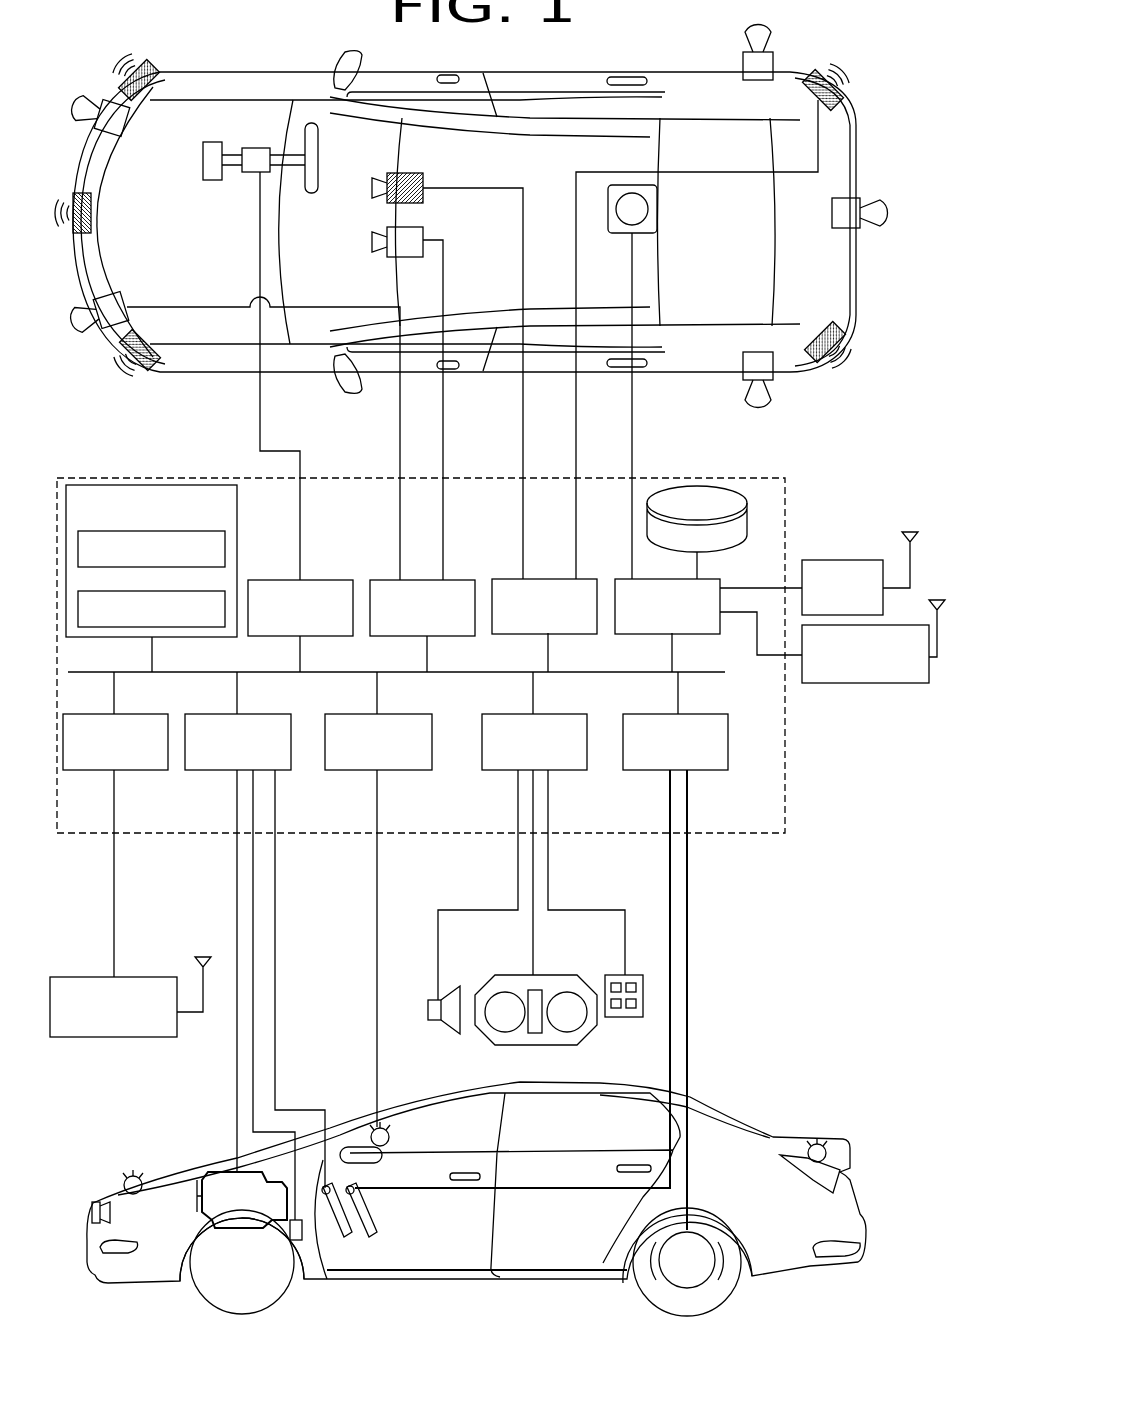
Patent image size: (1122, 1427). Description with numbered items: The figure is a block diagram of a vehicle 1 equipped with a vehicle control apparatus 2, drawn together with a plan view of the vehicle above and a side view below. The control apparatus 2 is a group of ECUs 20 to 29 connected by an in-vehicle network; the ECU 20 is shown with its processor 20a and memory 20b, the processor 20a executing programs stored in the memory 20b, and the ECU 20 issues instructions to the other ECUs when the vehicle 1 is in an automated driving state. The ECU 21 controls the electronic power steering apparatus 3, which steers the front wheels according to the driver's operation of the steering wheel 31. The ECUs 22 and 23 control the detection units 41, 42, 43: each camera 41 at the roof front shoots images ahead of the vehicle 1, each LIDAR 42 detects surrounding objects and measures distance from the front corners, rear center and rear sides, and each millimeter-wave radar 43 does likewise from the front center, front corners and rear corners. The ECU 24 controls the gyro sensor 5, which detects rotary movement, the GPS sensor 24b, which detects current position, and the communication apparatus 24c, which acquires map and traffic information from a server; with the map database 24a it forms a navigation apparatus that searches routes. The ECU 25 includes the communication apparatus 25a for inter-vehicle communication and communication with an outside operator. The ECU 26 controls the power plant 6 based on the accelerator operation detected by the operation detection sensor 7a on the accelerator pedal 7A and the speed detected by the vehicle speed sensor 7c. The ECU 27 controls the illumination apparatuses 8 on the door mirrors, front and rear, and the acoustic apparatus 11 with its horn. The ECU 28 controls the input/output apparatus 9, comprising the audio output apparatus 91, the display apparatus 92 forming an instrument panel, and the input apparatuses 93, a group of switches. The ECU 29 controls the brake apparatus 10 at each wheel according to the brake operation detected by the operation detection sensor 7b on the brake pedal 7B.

The vehicle 1 is at (870, 122).
The vehicle control apparatus 2 is at (765, 836).
The electronic power steering apparatus 3 is at (212, 182).
The steering wheel 31 is at (312, 195).
The detection unit (camera) 41 is at (425, 198).
The detection unit (LIDAR) 42 is at (118, 140).
The detection unit (millimeter-wave radar) 43 is at (147, 84).
The gyro sensor 5 is at (657, 210).
The ECU 20 is at (203, 485).
The processor 20a is at (225, 540).
The memory 20b is at (200, 587).
The ECU 21 is at (330, 578).
The ECU 22 is at (420, 578).
The ECU 23 is at (548, 578).
The ECU 24 is at (613, 578).
The database (map database) 24a is at (698, 484).
The GPS sensor 24b is at (862, 558).
The communication apparatus 24c is at (855, 685).
The ECU 25 is at (145, 773).
The communication apparatus 25a is at (115, 1040).
The ECU 26 is at (207, 773).
The ECU 27 is at (405, 773).
The ECU 28 is at (572, 773).
The ECU 29 is at (709, 773).
The power plant 6 is at (206, 1168).
The operation detection sensor 7a is at (333, 1134).
The accelerator pedal 7A is at (353, 1230).
The operation detection sensor 7b is at (352, 1188).
The brake pedal 7B is at (380, 1221).
The vehicle speed sensor 7c is at (294, 1258).
The illumination apparatus 8 is at (124, 1176).
The input/output apparatus 9 is at (485, 1046).
The audio output apparatus 91 is at (430, 1004).
The display apparatus 92 is at (497, 993).
The input apparatus 93 is at (618, 1018).
The brake apparatus 10 is at (690, 1272).
The acoustic apparatus 11 is at (88, 1210).